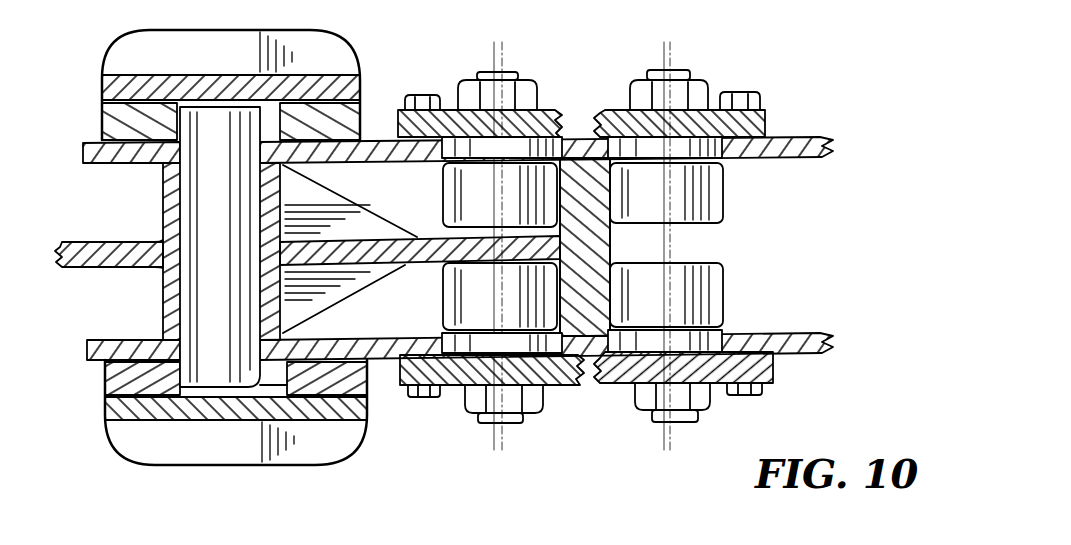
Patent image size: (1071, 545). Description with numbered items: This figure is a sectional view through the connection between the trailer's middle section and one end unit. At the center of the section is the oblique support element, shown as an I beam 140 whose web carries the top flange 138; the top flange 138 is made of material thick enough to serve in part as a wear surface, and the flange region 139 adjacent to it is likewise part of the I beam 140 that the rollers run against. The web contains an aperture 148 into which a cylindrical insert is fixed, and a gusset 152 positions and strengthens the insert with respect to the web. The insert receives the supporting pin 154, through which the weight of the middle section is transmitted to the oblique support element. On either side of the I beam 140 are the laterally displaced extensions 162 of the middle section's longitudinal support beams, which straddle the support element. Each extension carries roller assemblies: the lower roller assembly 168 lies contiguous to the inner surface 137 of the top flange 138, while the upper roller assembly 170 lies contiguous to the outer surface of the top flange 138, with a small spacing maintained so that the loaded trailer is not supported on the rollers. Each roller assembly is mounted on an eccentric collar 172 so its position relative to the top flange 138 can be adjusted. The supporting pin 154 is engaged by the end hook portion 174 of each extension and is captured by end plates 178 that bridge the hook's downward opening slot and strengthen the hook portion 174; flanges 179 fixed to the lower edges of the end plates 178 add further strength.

The inner surface 137 is at (562, 290).
The top flange 138 is at (612, 238).
The hub flange 139 is at (620, 255).
The I beam 140 is at (118, 240).
The aperture 148 is at (160, 307).
The gusset 152 is at (333, 200).
The supporting pin 154 is at (207, 123).
The laterally displaced extension 162 is at (790, 140).
The lower roller assembly 168 is at (513, 77).
The upper roller assembly 170 is at (688, 77).
The collar 172 is at (527, 143).
The end hook portion 174 is at (95, 357).
The end plate 178 is at (312, 83).
The flange 179 is at (125, 50).